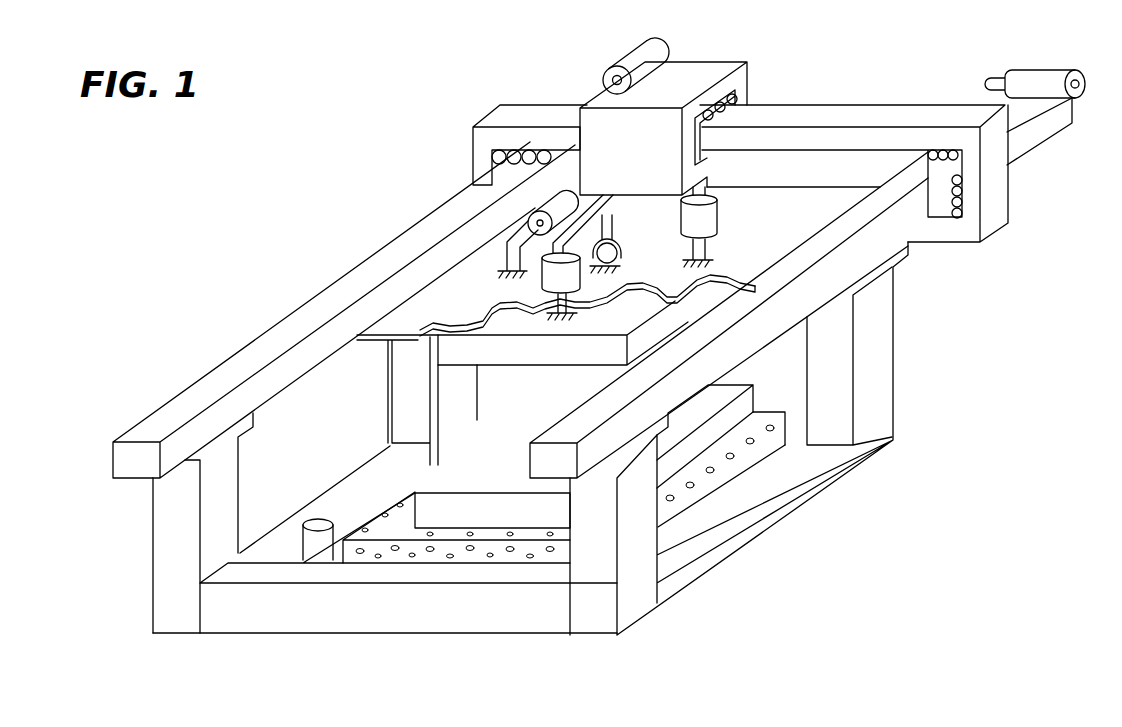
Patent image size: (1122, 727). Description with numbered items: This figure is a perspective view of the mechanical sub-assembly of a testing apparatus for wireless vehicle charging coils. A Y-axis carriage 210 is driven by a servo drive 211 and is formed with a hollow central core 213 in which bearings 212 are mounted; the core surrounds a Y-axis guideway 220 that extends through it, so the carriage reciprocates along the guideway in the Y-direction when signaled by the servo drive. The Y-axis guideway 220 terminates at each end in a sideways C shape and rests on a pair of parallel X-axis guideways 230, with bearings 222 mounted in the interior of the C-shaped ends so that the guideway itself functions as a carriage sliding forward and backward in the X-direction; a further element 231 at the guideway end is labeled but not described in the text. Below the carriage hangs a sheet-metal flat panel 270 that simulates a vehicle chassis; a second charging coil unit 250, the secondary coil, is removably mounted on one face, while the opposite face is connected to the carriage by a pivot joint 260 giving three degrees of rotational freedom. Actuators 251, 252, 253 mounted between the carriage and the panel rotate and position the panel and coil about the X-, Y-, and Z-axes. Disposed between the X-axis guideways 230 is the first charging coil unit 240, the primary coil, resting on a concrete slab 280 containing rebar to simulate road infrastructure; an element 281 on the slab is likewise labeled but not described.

The Y-axis carriage 210 is at (655, 130).
The servo drive 211 is at (646, 50).
The bearings 212 is at (740, 90).
The hollow central core 213 is at (738, 118).
The Y-axis guideway 220 is at (880, 130).
The bearings 222 is at (492, 155).
The X-axis guideways 230 is at (344, 298).
The drive roller 231 is at (1028, 90).
The first charging coil unit 240 is at (684, 457).
The second charging coil unit 250 is at (472, 303).
The actuator 251 is at (716, 222).
The actuator 252 is at (493, 313).
The actuator 253 is at (535, 205).
The pivot joint 260 is at (603, 254).
The flat panel 270 is at (422, 312).
The concrete slab 280 is at (400, 563).
The cylinder 281 is at (317, 555).